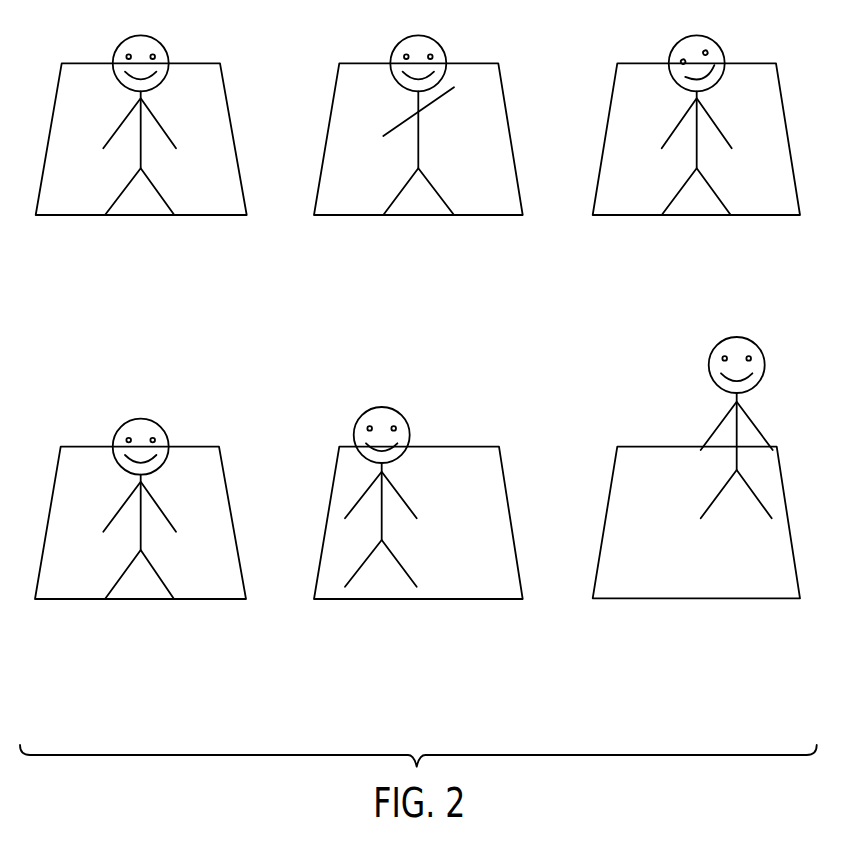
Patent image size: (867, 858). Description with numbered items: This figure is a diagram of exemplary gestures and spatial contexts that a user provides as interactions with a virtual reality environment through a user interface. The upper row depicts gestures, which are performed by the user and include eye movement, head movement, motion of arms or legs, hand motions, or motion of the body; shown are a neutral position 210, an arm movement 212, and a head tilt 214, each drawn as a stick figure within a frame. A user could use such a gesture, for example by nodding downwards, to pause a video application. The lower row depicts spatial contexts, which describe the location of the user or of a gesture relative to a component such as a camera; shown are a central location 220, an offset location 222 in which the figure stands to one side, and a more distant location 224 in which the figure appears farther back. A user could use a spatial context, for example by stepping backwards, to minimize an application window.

The neutral position 210 is at (141, 237).
The arm movement 212 is at (418, 237).
The head tilt 214 is at (696, 237).
The central location 220 is at (141, 620).
The offset location 222 is at (418, 620).
The more distant location 224 is at (696, 620).